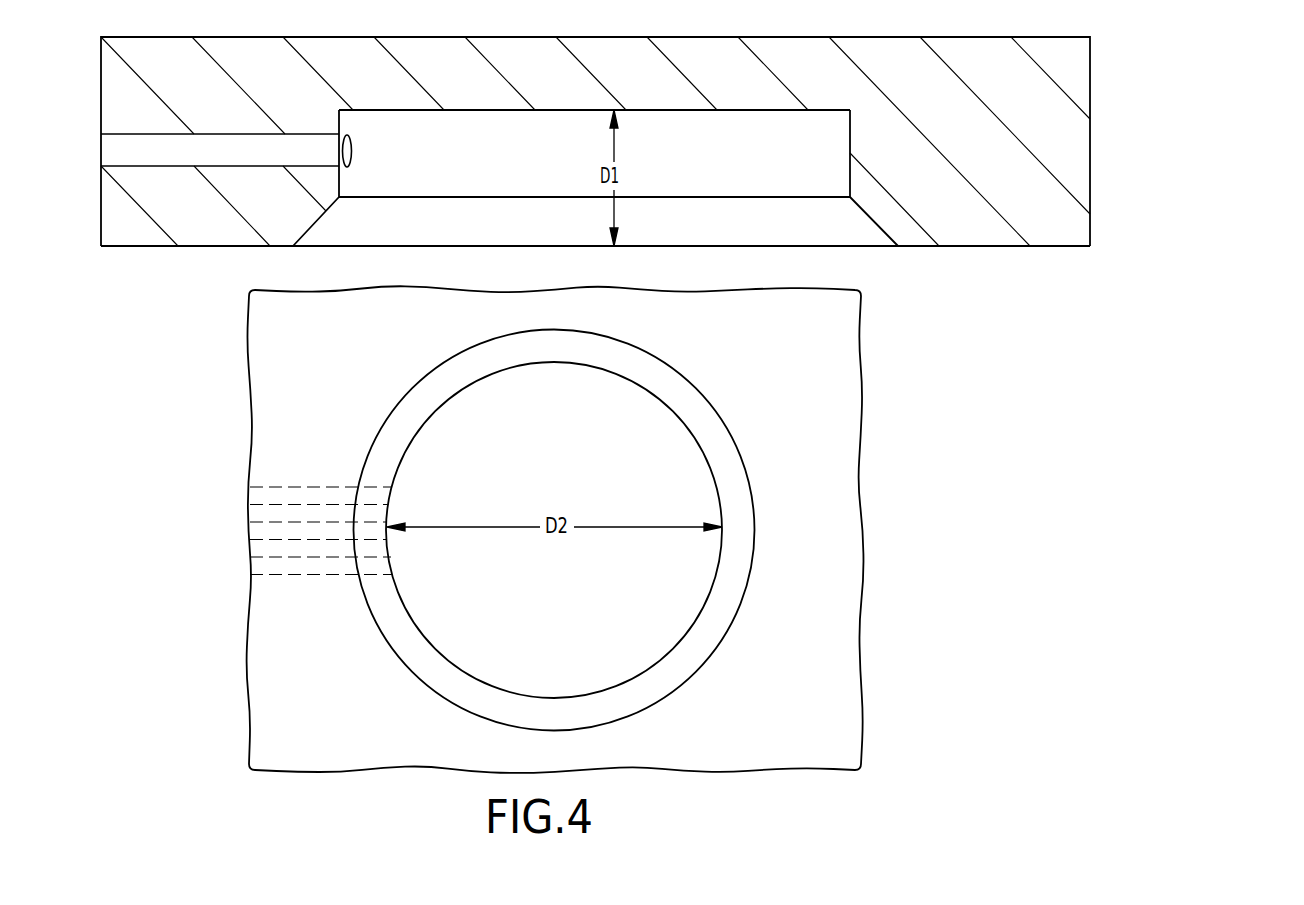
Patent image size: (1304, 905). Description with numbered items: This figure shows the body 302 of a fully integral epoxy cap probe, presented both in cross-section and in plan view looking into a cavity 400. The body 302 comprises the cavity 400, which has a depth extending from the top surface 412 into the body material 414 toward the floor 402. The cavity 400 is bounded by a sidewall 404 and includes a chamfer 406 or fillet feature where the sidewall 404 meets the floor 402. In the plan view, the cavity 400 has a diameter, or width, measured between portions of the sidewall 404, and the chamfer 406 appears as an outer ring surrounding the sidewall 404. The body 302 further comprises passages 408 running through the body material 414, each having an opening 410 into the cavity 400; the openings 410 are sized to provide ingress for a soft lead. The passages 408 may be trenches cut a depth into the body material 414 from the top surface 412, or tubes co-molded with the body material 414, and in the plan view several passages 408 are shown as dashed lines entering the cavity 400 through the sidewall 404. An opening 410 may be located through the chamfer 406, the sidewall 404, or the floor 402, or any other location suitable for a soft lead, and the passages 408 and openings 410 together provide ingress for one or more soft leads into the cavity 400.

The body 302 is at (1113, 90).
The cavity 400 is at (772, 166).
The floor 402 is at (775, 110).
The sidewall 404 is at (852, 115).
The chamfer 406 is at (880, 221).
The passages 408 is at (272, 134).
The openings 410 is at (352, 149).
The top surface 412 is at (201, 243).
The body material 414 is at (585, 77).